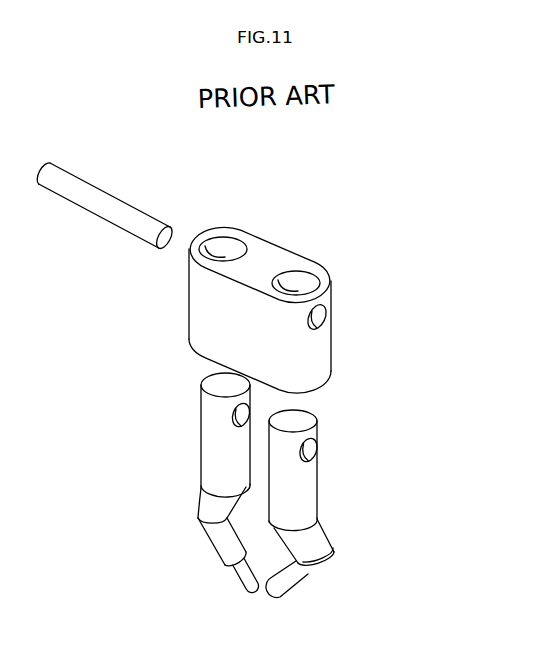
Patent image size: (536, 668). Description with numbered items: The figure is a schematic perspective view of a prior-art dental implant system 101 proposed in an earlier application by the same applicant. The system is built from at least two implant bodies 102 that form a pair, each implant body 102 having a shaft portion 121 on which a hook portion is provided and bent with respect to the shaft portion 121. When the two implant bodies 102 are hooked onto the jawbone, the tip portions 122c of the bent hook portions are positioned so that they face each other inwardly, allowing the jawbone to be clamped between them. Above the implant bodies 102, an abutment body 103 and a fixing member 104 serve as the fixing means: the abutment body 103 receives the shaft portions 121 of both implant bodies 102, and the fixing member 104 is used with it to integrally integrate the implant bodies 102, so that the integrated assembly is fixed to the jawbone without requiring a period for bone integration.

The dental implant system 101 is at (335, 183).
The implant body 102 is at (187, 390).
The abutment body 103 is at (328, 257).
The fixing member 104 is at (108, 210).
The shaft portion 121 is at (213, 442).
The tip portion 122c is at (250, 583).